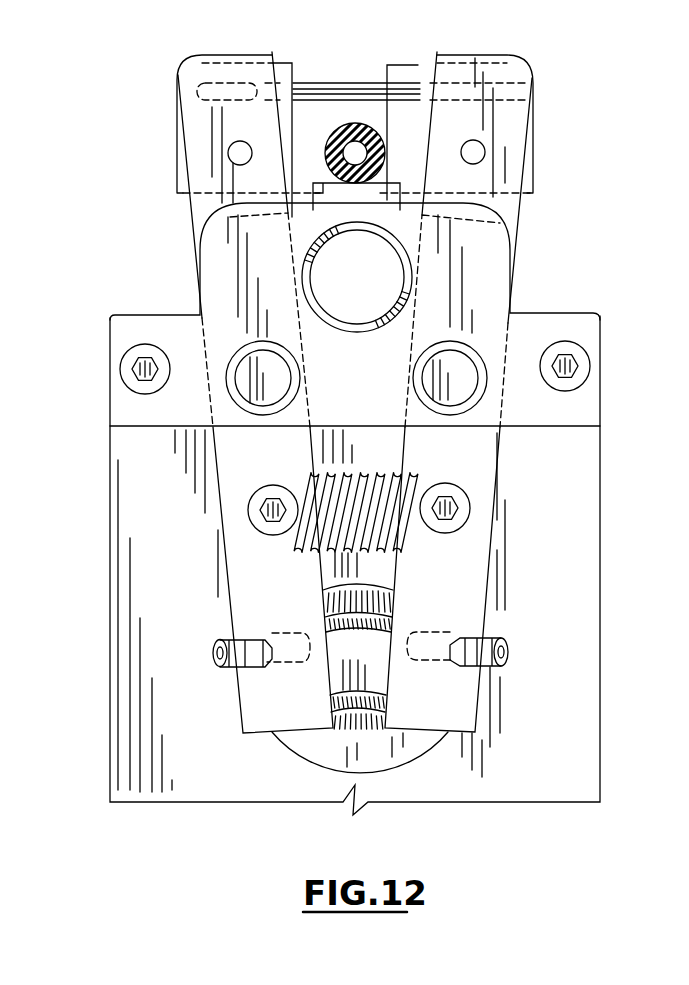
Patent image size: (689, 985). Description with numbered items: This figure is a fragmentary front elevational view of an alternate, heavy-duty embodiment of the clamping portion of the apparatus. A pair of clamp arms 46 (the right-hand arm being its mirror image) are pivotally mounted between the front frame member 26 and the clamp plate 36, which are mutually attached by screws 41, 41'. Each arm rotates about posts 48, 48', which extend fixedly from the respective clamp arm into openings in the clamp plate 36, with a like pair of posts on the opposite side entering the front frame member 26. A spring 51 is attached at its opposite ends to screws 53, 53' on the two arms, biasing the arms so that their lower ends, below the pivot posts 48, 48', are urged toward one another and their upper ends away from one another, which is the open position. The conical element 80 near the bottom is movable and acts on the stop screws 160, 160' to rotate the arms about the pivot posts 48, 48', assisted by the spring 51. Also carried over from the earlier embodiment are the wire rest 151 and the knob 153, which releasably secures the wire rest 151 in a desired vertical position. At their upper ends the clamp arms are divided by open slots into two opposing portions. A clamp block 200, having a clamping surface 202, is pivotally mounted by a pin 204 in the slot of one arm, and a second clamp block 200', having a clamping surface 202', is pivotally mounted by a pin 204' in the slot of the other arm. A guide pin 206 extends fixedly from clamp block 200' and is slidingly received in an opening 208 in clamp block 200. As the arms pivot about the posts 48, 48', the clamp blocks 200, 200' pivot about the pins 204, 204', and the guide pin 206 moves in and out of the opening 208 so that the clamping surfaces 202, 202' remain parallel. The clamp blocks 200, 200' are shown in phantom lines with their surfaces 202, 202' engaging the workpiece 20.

The workpiece 20 is at (322, 152).
The front frame member 26 is at (587, 558).
The clamp plate 36 is at (543, 323).
The screw 41 is at (97, 369).
The screw 41' is at (603, 364).
The clamp arm 46 is at (247, 465).
The post 48 is at (226, 383).
The post 48' is at (489, 383).
The spring 51 is at (300, 553).
The screw 53 is at (230, 527).
The screw 53' is at (447, 538).
The conical element 80 is at (355, 735).
The wire rest 151 is at (367, 197).
The knob 153 is at (377, 300).
The stop screw 160 is at (245, 677).
The stop screw 160' is at (492, 675).
The clamp block 200 is at (204, 124).
The clamp block 200' is at (504, 124).
The clamping surface 202 is at (294, 110).
The clamping surface 202' is at (431, 101).
The pin 204 is at (175, 175).
The pin 204' is at (544, 168).
The guide pin 206 is at (345, 88).
The opening 208 is at (255, 88).